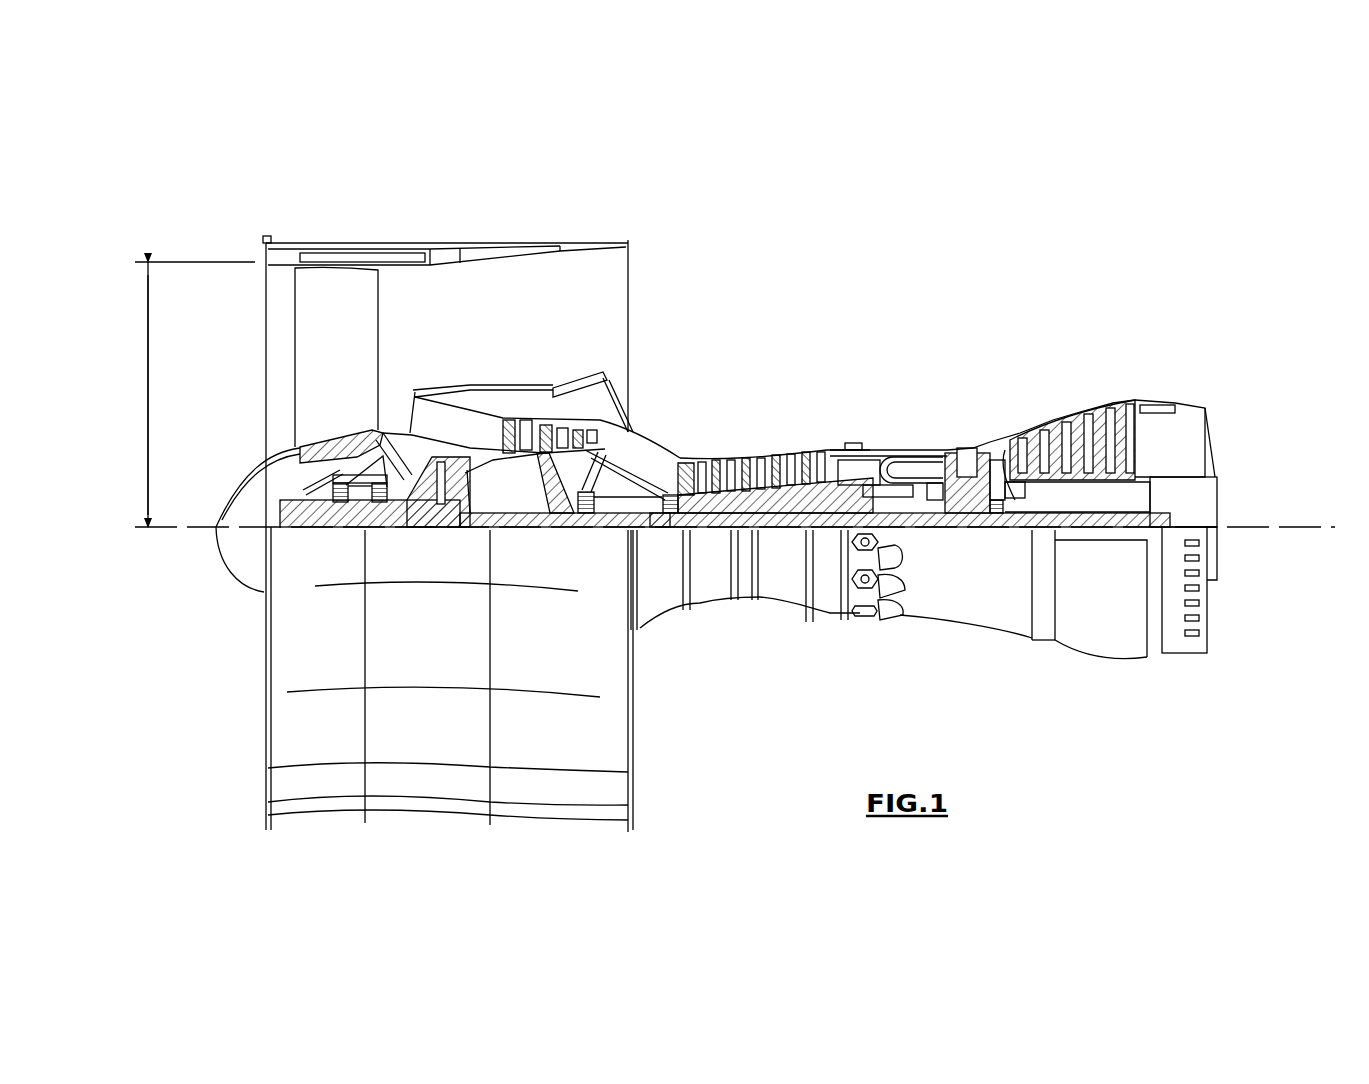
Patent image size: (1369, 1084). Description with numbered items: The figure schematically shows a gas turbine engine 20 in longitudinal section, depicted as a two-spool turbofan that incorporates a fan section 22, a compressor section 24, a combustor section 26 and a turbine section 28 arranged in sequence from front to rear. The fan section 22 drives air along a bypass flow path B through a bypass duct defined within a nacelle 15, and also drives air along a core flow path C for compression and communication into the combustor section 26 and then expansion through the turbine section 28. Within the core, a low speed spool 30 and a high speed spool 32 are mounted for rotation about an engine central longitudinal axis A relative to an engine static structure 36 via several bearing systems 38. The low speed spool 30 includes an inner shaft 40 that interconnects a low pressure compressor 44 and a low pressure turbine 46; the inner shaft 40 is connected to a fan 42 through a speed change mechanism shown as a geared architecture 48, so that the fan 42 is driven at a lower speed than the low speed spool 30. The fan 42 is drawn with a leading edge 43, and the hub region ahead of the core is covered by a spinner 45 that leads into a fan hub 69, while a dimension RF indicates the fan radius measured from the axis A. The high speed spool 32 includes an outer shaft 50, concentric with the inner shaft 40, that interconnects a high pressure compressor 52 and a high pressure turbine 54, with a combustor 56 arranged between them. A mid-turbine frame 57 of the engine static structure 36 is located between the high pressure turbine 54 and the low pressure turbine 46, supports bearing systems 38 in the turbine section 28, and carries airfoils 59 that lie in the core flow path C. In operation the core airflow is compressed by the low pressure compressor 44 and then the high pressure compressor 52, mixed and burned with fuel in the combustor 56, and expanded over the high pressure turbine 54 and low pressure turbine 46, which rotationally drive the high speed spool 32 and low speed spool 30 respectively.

The gas turbine engine 20 is at (912, 292).
The fan section 22 is at (381, 240).
The nacelle 15 is at (441, 245).
The compressor section 24 is at (680, 435).
The combustor section 26 is at (900, 420).
The turbine section 28 is at (1050, 388).
The low speed spool 30 is at (782, 535).
The high speed spool 32 is at (830, 475).
The engine static structure 36 is at (826, 620).
The bearing systems 38 is at (586, 518).
The inner shaft 40 is at (648, 535).
The fan 42 is at (392, 546).
The fan blade leading edge 43 is at (305, 342).
The low pressure compressor 44 is at (555, 435).
The spinner / nose cone 45 is at (280, 465).
The low pressure turbine 46 is at (1092, 425).
The geared architecture 48 is at (452, 520).
The outer shaft 50 is at (905, 530).
The high pressure compressor 52 is at (775, 462).
The high pressure turbine 54 is at (968, 448).
The combustor 56 is at (902, 468).
The mid-turbine frame 57 is at (1008, 438).
The airfoils 59 is at (1015, 500).
The fan hub 69 is at (307, 448).
The engine central longitudinal axis A is at (1305, 521).
The bypass flow path B is at (410, 318).
The core flow path C is at (452, 424).
The fan radius RF is at (148, 402).